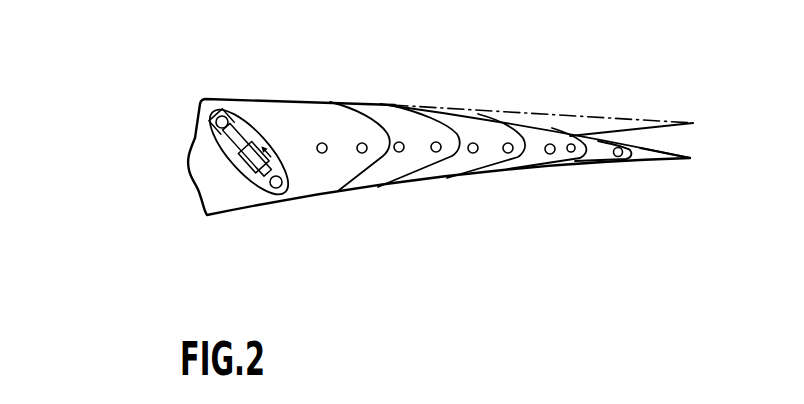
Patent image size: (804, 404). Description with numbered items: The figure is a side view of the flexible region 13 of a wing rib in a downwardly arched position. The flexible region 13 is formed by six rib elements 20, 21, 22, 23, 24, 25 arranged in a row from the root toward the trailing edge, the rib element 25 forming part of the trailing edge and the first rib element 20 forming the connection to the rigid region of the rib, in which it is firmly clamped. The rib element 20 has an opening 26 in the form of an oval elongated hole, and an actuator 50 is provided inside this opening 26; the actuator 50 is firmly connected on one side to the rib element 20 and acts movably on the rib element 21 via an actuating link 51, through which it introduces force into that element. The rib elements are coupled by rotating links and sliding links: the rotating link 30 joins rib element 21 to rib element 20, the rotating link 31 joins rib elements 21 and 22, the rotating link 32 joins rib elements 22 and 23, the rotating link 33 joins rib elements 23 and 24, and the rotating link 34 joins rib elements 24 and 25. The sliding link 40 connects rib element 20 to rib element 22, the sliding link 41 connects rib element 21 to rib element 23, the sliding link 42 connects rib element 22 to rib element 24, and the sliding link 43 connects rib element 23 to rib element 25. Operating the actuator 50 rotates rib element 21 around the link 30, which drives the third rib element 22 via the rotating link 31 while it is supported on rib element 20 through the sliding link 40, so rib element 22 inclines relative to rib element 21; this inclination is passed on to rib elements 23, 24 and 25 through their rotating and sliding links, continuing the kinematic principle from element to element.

The flexible region 13 is at (85, 141).
The first rib element 20 is at (273, 98).
The second rib element 21 is at (394, 113).
The third rib element 22 is at (466, 122).
The fourth rib element 23 is at (536, 130).
The fifth rib element 24 is at (596, 141).
The sixth rib element 25 is at (644, 150).
The opening 26 is at (220, 148).
The rotating link 30 is at (323, 153).
The rotating link 31 is at (400, 152).
The rotating link 32 is at (474, 153).
The rotating link 33 is at (551, 154).
The rotating link 34 is at (619, 156).
The sliding link 40 is at (363, 153).
The sliding link 41 is at (437, 152).
The sliding link 42 is at (509, 153).
The sliding link 43 is at (573, 152).
The actuator 50 is at (243, 162).
The actuating link 51 is at (277, 188).